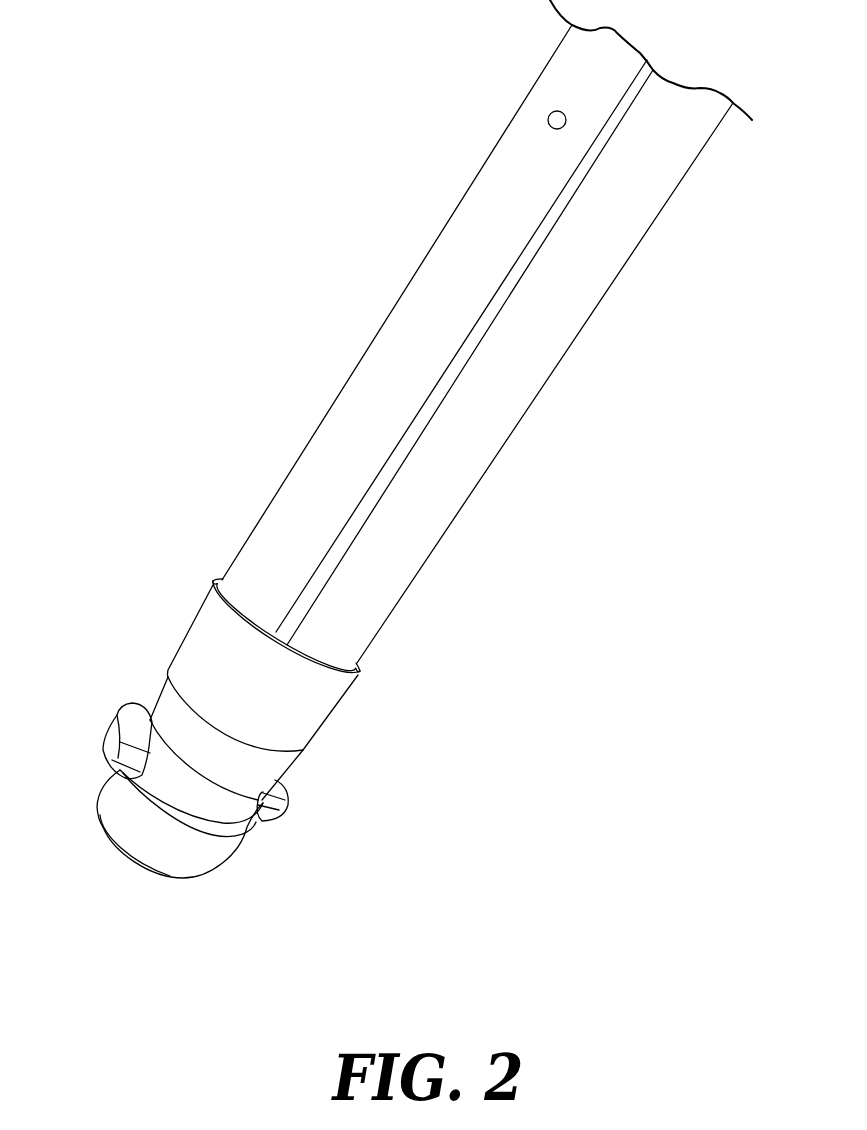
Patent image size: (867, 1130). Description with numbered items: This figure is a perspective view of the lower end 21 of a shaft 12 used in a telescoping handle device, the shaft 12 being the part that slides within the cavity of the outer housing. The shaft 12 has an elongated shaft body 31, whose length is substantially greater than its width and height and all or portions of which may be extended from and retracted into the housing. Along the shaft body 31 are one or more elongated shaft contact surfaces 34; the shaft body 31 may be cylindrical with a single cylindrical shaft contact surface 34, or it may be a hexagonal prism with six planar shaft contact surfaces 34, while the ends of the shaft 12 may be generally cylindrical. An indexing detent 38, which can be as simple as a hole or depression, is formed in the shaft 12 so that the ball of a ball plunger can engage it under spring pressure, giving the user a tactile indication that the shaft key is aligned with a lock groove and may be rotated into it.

The shaft 12 is at (392, 458).
The shaft contact surface 34 is at (424, 310).
The shaft body 31 is at (370, 493).
The indexing detent 38 is at (548, 119).
The lower end 21 is at (196, 748).